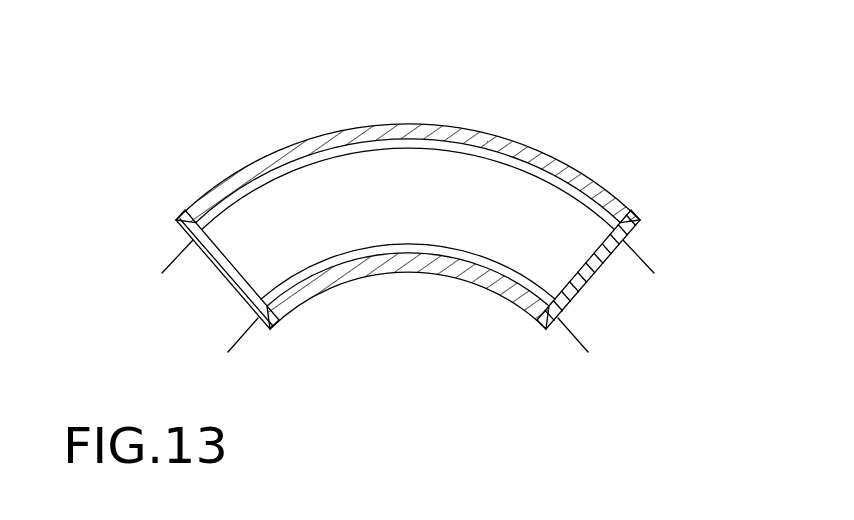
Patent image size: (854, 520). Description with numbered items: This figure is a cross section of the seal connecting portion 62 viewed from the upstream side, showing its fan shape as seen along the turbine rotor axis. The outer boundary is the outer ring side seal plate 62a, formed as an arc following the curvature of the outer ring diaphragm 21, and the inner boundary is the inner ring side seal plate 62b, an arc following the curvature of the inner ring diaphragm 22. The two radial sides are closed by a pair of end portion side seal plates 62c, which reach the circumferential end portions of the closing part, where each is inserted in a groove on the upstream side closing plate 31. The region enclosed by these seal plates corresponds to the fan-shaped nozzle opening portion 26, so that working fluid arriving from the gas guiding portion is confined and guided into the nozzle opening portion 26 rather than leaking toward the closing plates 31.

The seal connecting portion 62 is at (589, 166).
The outer ring side seal plate 62a is at (396, 122).
The inner ring side seal plate 62b is at (402, 262).
The end portion side seal plate 62c is at (229, 282).
The outer ring diaphragm 21 is at (528, 170).
The inner ring diaphragm 22 is at (480, 250).
The nozzle opening portion 26 is at (334, 226).
The closing plate 31 is at (185, 270).